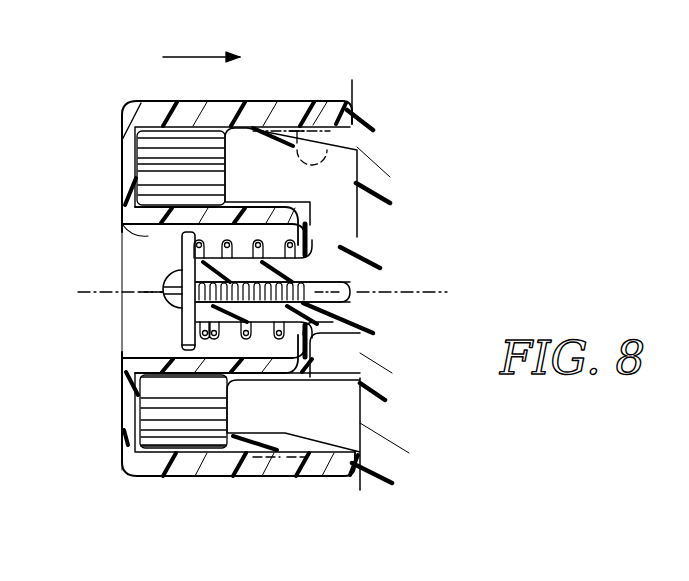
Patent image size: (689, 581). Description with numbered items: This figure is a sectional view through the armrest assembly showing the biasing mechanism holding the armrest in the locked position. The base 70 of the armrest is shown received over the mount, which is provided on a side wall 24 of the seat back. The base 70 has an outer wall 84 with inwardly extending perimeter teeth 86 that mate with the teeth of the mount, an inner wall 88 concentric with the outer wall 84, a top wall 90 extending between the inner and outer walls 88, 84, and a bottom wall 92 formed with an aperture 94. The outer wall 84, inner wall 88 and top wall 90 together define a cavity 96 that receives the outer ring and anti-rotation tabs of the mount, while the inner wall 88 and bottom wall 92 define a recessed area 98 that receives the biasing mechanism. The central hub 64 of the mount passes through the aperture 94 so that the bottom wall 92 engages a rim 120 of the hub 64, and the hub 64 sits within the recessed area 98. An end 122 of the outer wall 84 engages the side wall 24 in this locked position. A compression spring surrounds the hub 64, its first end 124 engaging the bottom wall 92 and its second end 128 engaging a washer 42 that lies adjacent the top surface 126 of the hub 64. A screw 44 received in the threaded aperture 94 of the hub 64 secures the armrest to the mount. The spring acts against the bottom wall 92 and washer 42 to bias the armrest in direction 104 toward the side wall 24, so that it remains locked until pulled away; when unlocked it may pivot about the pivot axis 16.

The pivot axis 16 is at (82, 290).
The side wall 24 is at (340, 100).
The washer 42 is at (195, 345).
The screw 44 is at (168, 303).
The central hub 64 is at (232, 270).
The base 70 is at (228, 492).
The outer wall 84 is at (215, 104).
The inwardly extending perimeter teeth 86 is at (323, 102).
The inner wall 88 is at (128, 232).
The top wall 90 is at (122, 152).
The bottom wall 92 is at (307, 220).
The aperture 94 is at (312, 262).
The cavity 96 is at (203, 426).
The recessed area 98 is at (142, 324).
The direction 104 is at (188, 55).
The rim 120 is at (333, 310).
The end 122 is at (352, 112).
The first end 124 is at (318, 253).
The top surface 126 is at (182, 263).
The second end 128 is at (238, 330).